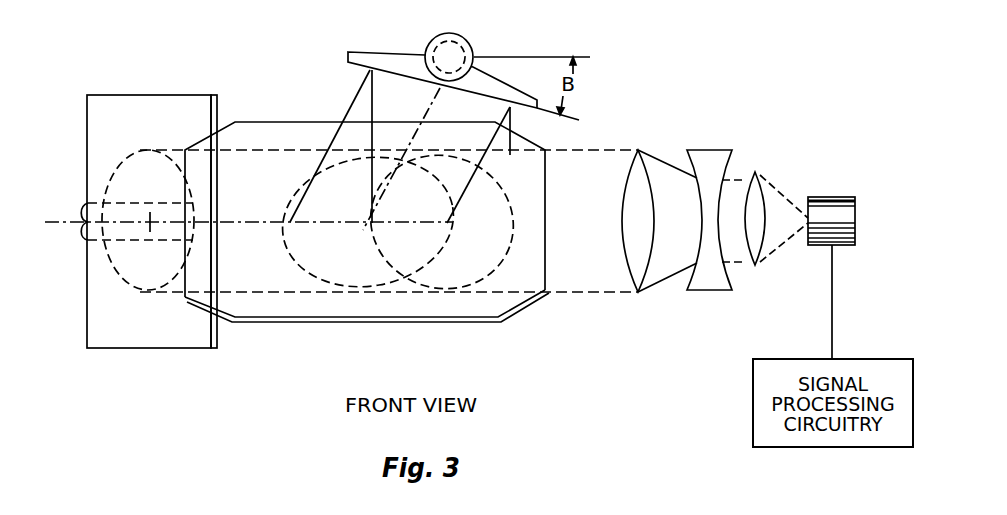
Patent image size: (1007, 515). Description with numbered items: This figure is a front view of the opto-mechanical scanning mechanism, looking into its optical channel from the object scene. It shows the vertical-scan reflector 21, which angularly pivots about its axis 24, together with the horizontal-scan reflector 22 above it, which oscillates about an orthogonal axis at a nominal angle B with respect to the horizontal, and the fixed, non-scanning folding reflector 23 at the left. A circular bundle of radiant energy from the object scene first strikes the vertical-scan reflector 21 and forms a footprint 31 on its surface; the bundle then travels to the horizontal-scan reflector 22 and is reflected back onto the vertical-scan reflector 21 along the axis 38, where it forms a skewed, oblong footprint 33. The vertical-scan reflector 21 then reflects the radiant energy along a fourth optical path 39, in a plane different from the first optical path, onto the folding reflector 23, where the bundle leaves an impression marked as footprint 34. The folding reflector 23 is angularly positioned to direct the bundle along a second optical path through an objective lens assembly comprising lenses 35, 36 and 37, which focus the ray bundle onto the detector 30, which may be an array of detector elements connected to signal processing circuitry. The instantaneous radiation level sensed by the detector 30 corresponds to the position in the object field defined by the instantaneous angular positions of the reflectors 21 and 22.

The vertical-scan reflector 21 is at (375, 322).
The horizontal-scan reflector 22 is at (402, 53).
The fixed folding reflector 23 is at (147, 95).
The pivot axis of vertical-scan reflector 24 is at (69, 223).
The detector 30 is at (827, 197).
The first footprint 31 is at (502, 265).
The third footprint 33 is at (296, 277).
The footprint on folding reflector 34 is at (112, 177).
The objective lens 35 is at (640, 168).
The objective lens 36 is at (713, 150).
The objective lens 37 is at (758, 172).
The third optical path axis 38 is at (423, 118).
The fourth optical path 39 is at (252, 220).